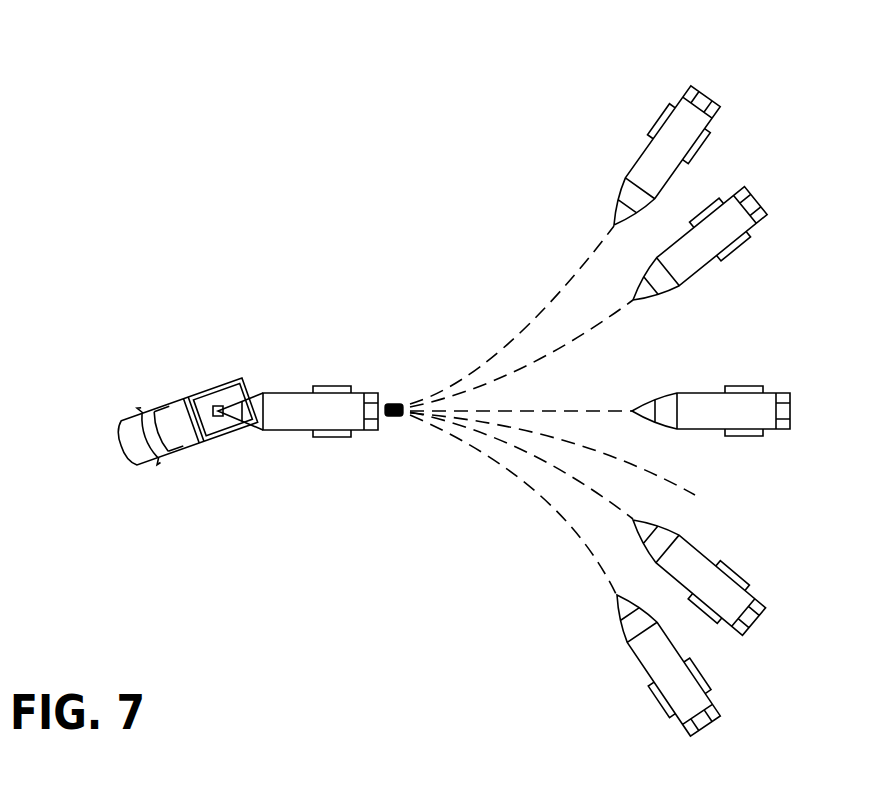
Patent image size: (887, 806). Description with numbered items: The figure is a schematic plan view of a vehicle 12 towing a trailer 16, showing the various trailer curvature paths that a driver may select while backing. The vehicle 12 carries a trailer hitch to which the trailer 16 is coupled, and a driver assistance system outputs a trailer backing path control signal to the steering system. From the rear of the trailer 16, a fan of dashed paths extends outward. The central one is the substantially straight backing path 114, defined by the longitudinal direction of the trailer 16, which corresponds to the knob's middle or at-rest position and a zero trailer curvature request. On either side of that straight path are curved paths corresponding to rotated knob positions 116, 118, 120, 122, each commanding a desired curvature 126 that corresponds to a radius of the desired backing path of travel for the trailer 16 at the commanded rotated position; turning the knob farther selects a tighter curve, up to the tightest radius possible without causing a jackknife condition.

The vehicle 12 is at (207, 457).
The trailer 16 is at (330, 446).
The substantially straight backing path 114 is at (790, 408).
The rotated position 116 is at (753, 193).
The rotated position 118 is at (707, 95).
The rotated position 120 is at (757, 623).
The rotated position 122 is at (707, 727).
The desired curvature 126 is at (663, 479).